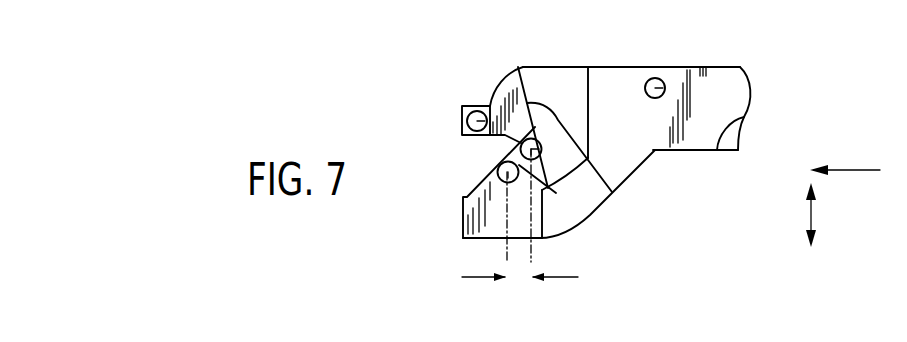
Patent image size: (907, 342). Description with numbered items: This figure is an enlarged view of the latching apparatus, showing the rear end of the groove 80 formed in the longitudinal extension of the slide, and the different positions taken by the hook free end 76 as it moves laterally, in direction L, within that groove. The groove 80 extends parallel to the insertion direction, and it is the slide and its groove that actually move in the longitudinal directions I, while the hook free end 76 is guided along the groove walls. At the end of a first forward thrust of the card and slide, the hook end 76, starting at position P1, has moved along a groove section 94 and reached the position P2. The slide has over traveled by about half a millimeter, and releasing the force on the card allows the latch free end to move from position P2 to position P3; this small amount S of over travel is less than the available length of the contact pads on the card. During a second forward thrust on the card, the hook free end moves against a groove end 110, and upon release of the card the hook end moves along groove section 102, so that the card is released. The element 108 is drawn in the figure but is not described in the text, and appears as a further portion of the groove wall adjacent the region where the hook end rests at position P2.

The groove section 94 is at (540, 78).
The position P1 is at (687, 58).
The rear free end of the hook 76 is at (664, 83).
The groove 80 is at (748, 118).
The position P2 is at (462, 123).
The rectangular bearing block 108 is at (439, 116).
The position P3 is at (548, 150).
The groove end 110 is at (462, 208).
The groove section 102 is at (568, 205).
The amount of over travel S is at (520, 267).
The longitudinal directions I is at (848, 170).
The lateral direction L is at (813, 204).